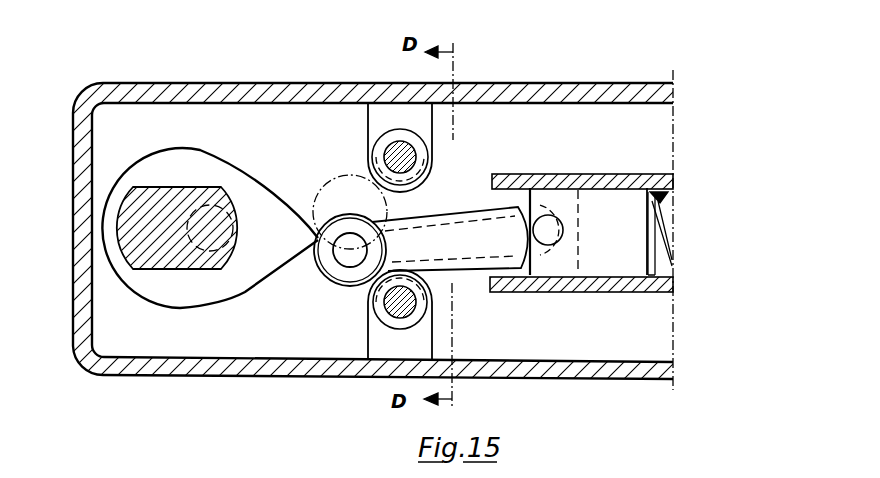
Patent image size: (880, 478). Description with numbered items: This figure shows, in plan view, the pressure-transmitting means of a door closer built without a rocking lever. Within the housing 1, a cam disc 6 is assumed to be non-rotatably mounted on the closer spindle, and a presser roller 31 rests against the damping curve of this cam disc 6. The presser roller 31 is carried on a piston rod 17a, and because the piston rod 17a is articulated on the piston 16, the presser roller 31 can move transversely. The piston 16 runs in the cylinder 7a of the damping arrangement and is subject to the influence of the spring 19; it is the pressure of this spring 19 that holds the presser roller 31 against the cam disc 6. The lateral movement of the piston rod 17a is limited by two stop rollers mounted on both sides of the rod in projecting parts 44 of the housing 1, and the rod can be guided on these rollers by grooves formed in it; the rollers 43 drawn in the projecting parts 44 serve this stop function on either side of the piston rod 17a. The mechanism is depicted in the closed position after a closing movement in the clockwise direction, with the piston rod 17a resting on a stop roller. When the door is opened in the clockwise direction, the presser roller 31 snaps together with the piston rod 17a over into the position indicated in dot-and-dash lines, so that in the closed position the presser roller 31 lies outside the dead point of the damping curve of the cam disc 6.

The housing 1 is at (253, 368).
The cam disc 6 is at (231, 278).
The presser roller 31 is at (336, 280).
The projecting parts 44 is at (402, 117).
The guide roller 43 is at (370, 150).
The piston rod 17a is at (463, 243).
The piston 16 is at (605, 213).
The cylinder 7a is at (587, 280).
The spring 19 is at (665, 200).